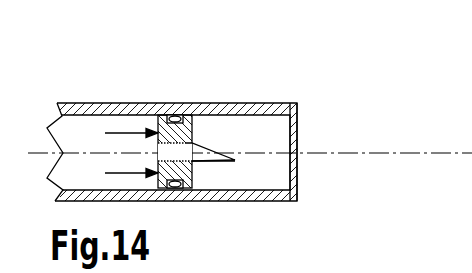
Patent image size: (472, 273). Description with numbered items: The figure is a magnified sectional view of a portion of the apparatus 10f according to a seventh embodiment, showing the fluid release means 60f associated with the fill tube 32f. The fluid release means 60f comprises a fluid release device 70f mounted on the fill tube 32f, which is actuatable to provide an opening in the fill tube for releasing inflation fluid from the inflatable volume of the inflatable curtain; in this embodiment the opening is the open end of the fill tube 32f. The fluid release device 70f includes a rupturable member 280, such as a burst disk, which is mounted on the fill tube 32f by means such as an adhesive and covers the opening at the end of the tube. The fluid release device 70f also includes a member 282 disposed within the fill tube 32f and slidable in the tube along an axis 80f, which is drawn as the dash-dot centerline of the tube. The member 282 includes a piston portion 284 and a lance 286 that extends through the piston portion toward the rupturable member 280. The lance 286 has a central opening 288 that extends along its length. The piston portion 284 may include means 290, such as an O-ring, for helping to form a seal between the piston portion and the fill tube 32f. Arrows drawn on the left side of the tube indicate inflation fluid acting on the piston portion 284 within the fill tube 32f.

The apparatus 10f is at (283, 68).
The fill tube 32f is at (87, 107).
The fluid release means 60f is at (308, 107).
The fluid release device 70f is at (315, 122).
The axis 80f is at (327, 151).
The rupturable member 280 is at (295, 180).
The member 282 is at (160, 118).
The piston portion 284 is at (186, 186).
The lance 286 is at (216, 164).
The central opening 288 is at (212, 143).
The means for helping to form a seal 290 is at (175, 116).